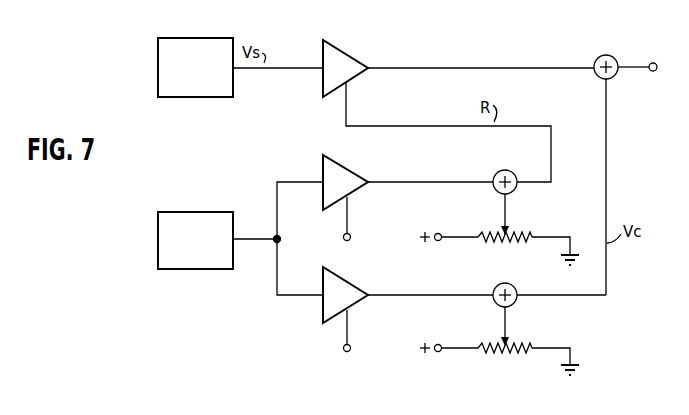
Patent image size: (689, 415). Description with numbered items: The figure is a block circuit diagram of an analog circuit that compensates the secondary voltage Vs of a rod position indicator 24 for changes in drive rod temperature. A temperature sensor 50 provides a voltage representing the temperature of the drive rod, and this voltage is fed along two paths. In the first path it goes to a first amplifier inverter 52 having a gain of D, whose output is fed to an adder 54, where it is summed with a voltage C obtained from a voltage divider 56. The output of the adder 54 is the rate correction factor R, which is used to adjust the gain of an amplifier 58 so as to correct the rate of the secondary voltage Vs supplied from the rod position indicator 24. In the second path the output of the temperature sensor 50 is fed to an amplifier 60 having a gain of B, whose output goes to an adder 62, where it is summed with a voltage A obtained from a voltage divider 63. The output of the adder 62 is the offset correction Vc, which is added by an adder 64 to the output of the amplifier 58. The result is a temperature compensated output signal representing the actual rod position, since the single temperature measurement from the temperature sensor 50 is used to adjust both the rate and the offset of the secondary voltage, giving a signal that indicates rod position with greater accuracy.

The rod position indicator 24 is at (206, 77).
The temperature sensor 50 is at (206, 250).
The first amplifier inverter 52 is at (343, 178).
The adder 54 is at (498, 170).
The voltage divider 56 is at (494, 248).
The amplifier 58 is at (344, 63).
The amplifier 60 is at (342, 292).
The adder 62 is at (515, 285).
The voltage divider 63 is at (505, 360).
The adder 64 is at (598, 57).